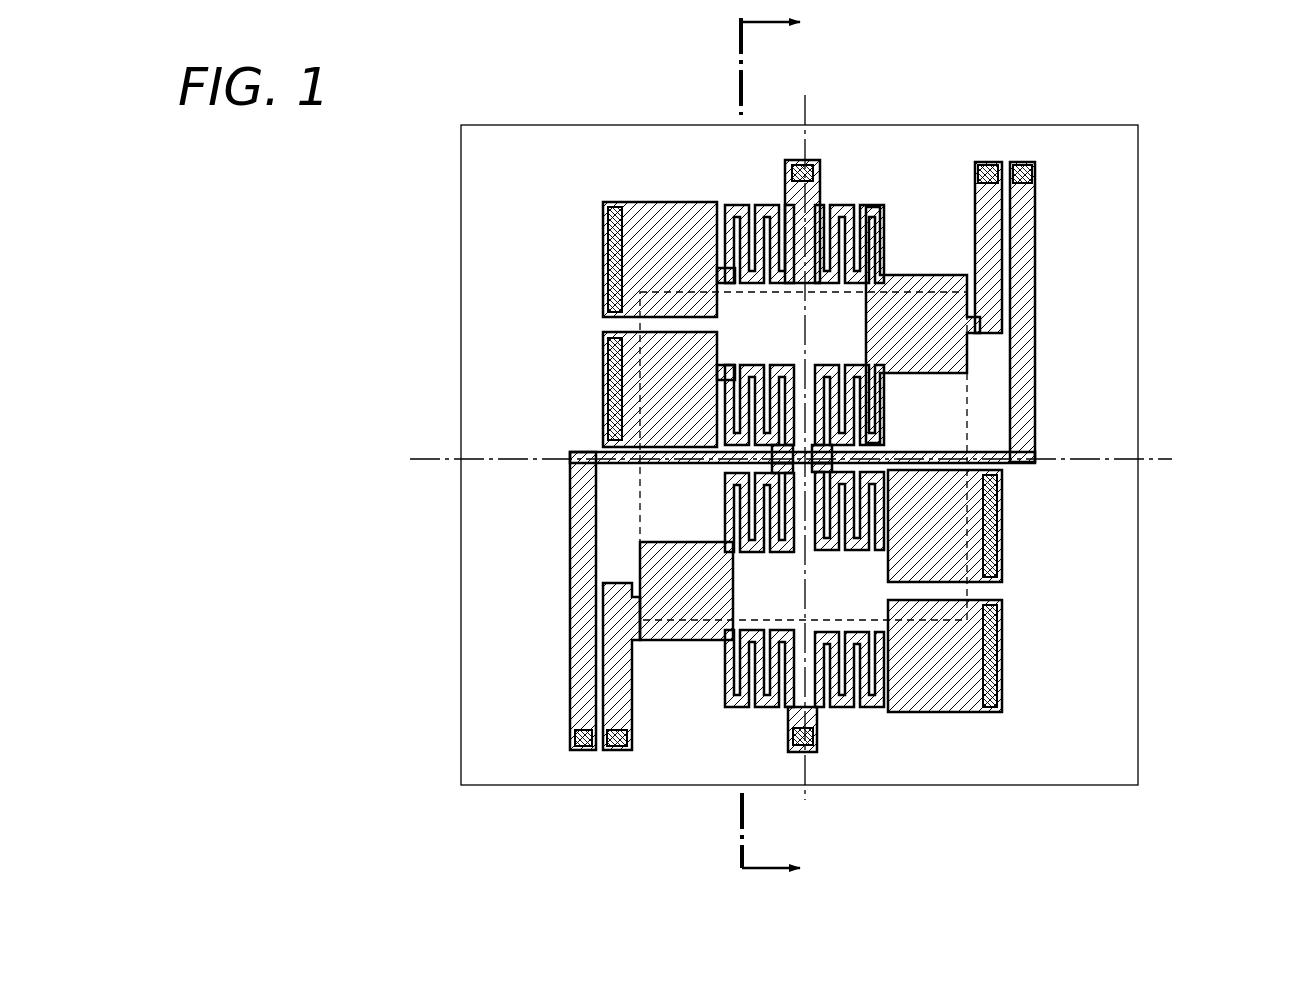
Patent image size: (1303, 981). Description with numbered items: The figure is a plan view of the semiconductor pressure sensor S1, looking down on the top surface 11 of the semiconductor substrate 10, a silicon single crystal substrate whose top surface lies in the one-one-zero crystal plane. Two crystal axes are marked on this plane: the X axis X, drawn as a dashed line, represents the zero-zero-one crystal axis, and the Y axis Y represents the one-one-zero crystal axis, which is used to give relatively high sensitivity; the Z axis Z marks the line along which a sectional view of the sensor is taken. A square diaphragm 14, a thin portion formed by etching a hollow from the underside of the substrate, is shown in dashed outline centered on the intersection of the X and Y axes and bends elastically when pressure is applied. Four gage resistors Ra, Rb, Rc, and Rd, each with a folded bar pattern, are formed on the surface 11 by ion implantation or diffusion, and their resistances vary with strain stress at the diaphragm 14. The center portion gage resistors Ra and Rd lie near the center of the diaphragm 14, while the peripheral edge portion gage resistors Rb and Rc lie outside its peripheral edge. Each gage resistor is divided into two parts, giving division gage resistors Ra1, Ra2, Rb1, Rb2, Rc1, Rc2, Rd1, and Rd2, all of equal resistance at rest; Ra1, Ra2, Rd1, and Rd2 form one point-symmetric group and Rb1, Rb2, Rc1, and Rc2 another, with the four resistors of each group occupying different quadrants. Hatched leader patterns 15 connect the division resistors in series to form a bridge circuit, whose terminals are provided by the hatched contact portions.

The semiconductor pressure sensor S1 is at (530, 108).
The semiconductor substrate 10 is at (1140, 190).
The top surface 11 is at (1105, 125).
The diaphragm 14 is at (967, 392).
The leader patterns 15 is at (655, 205).
The gage resistor Ra is at (1245, 472).
The division gage resistor Ra1 is at (870, 480).
The division gage resistor Ra2 is at (880, 437).
The gage resistor Rb is at (973, 80).
The division gage resistor Rb1 is at (845, 210).
The division gage resistor Rb2 is at (770, 210).
The gage resistor Rc is at (1000, 845).
The division gage resistor Rc1 is at (870, 710).
The division gage resistor Rc2 is at (767, 700).
The gage resistor Rd is at (365, 525).
The division gage resistor Rd1 is at (725, 483).
The division gage resistor Rd2 is at (752, 370).
The X axis X is at (780, 460).
The Y axis Y is at (801, 434).
The Z axis Z is at (780, 448).